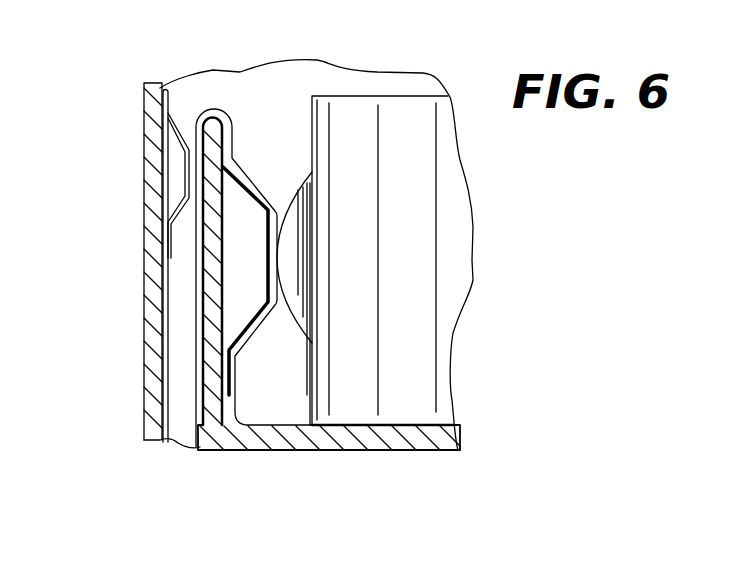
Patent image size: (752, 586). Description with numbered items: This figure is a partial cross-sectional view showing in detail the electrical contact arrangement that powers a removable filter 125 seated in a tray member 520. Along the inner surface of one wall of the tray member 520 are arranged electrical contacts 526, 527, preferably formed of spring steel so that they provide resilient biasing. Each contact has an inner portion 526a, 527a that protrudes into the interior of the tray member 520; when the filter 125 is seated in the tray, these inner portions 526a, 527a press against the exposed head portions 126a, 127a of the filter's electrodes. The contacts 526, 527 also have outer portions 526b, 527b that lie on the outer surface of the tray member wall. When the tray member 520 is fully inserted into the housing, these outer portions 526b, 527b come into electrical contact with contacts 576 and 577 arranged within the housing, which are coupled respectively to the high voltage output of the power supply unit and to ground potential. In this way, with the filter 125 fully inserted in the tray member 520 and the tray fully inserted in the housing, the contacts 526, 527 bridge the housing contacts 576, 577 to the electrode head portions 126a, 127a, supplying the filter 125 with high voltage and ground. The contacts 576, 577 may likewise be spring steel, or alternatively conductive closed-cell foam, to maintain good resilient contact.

The tray member 520 is at (205, 390).
The contact 576 is at (173, 221).
The contact 577 is at (171, 96).
The electrical contact 526 is at (254, 230).
The electrical contact 527 is at (232, 126).
The inner portion 526a is at (348, 187).
The inner portion 527a is at (295, 190).
The outer portion 526b is at (131, 185).
The outer portion 527b is at (196, 238).
The exposed head portion 126a is at (260, 351).
The exposed head portion 127a is at (296, 313).
The filter 125 is at (408, 403).